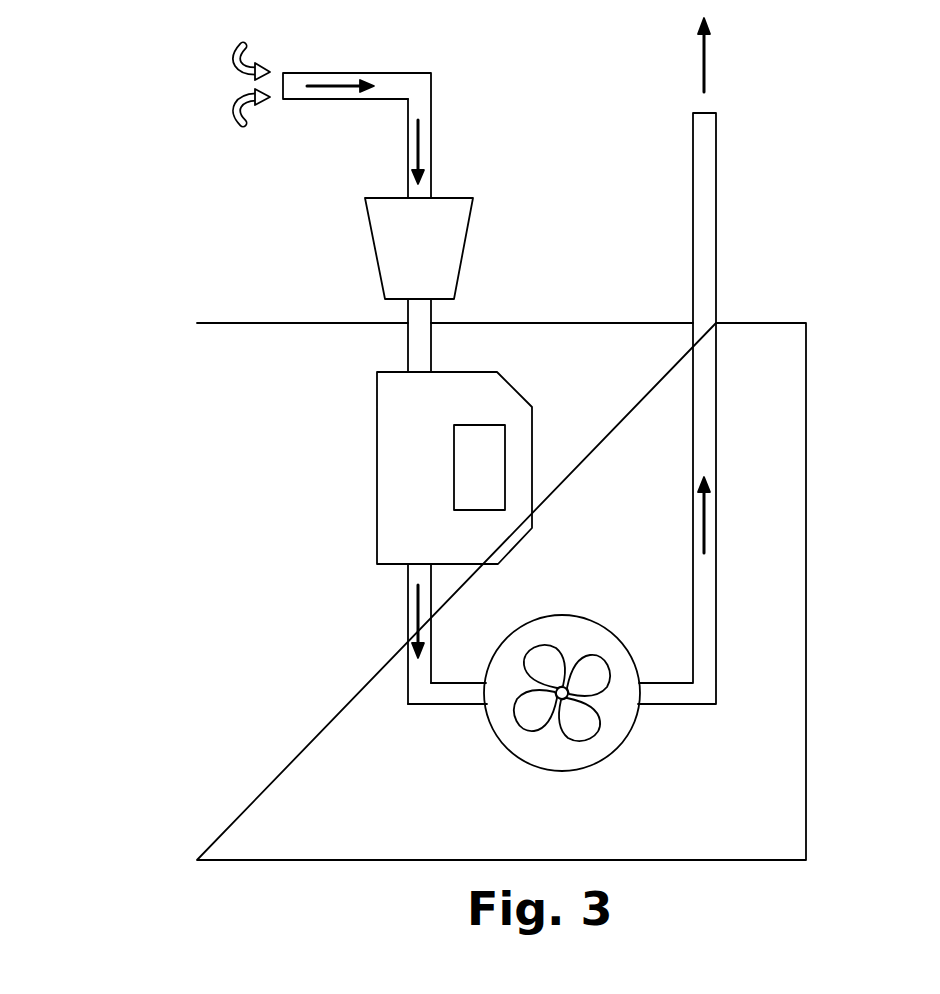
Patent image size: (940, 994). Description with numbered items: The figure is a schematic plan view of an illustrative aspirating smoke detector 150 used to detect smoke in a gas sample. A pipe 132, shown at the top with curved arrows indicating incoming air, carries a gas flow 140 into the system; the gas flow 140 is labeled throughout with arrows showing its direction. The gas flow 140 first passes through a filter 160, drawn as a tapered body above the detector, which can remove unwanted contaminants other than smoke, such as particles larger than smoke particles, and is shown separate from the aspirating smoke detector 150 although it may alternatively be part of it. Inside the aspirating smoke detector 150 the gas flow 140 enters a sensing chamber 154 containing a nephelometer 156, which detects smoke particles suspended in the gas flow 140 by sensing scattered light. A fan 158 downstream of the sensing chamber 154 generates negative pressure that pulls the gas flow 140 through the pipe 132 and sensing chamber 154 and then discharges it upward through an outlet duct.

The pipe 132 is at (418, 95).
The gas flow 140 is at (420, 150).
The aspirating smoke detector 150 is at (828, 358).
The sensing chamber 154 is at (508, 405).
The nephelometer 156 is at (480, 467).
The fan 158 is at (612, 724).
The filter 160 is at (442, 252).